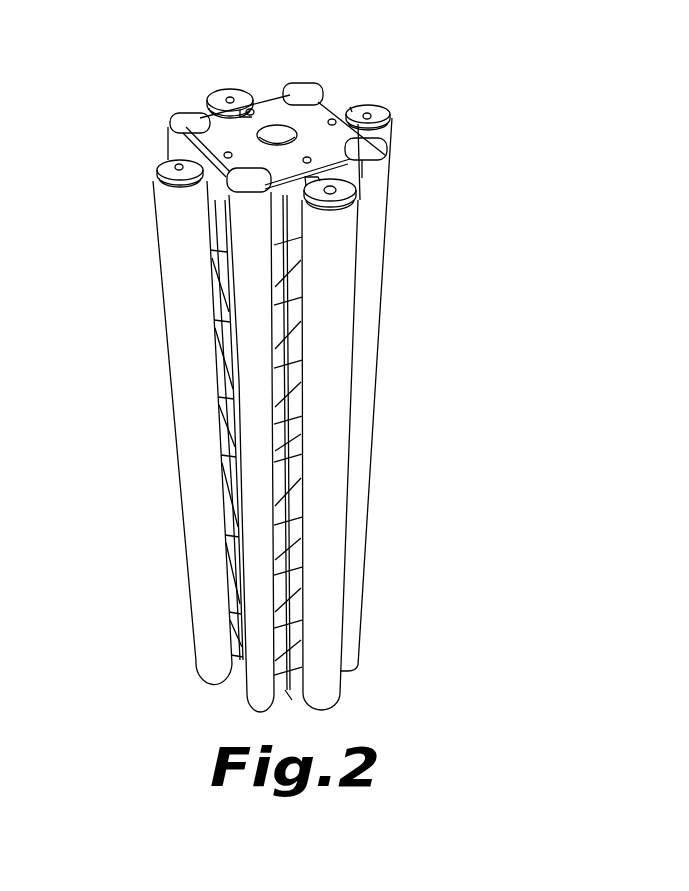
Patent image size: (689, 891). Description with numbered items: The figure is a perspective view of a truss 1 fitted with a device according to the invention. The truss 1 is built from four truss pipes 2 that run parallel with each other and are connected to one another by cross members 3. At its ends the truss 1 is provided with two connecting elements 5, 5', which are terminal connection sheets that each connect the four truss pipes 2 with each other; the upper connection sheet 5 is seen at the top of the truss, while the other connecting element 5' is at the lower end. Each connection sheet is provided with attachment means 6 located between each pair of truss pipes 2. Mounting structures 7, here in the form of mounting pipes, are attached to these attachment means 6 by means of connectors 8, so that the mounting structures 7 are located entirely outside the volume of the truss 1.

The truss 1 is at (398, 72).
The truss pipe 2 is at (178, 121).
The cross member 3 is at (222, 457).
The connecting element 5 is at (373, 89).
The connecting element 5' is at (298, 715).
The attachment means 6 is at (252, 108).
The mounting structure 7 is at (207, 108).
The connector 8 is at (247, 97).